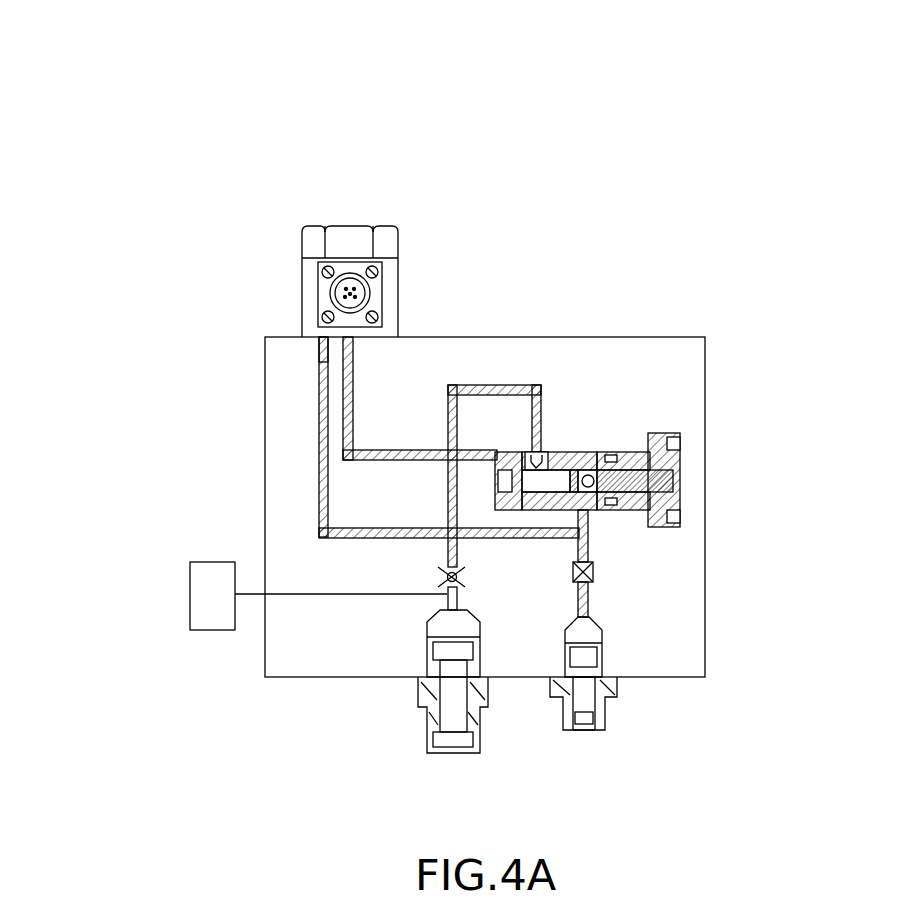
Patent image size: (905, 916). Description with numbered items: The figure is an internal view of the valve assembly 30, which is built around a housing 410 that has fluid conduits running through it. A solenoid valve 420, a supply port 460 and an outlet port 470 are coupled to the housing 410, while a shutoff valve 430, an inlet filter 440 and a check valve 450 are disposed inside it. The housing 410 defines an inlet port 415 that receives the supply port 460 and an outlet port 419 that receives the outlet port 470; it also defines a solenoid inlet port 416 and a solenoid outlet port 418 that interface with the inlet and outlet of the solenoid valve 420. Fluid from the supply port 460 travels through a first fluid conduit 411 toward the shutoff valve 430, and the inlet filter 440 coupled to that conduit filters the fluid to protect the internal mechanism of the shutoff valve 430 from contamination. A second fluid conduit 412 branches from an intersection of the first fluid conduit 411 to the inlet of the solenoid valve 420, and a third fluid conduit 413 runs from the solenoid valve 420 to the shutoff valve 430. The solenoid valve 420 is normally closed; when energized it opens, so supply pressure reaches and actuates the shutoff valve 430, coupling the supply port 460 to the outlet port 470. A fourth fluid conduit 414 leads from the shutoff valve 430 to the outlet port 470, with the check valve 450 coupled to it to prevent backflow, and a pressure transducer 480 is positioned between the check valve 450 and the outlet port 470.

The valve assembly 30 is at (240, 108).
The housing 410 is at (533, 337).
The first fluid conduit 411 is at (588, 548).
The second fluid conduit 412 is at (356, 428).
The third fluid conduit 413 is at (395, 450).
The fourth fluid conduit 414 is at (520, 392).
The inlet port 415 is at (587, 633).
The solenoid inlet port 416 is at (320, 343).
The solenoid outlet port 418 is at (348, 337).
The outlet port 419 is at (430, 628).
The solenoid valve 420 is at (387, 243).
The shutoff valve 430 is at (640, 452).
The inlet filter 440 is at (593, 567).
The check valve 450 is at (445, 572).
The supply port 460 is at (613, 687).
The outlet port 470 is at (432, 705).
The pressure transducer 480 is at (195, 603).